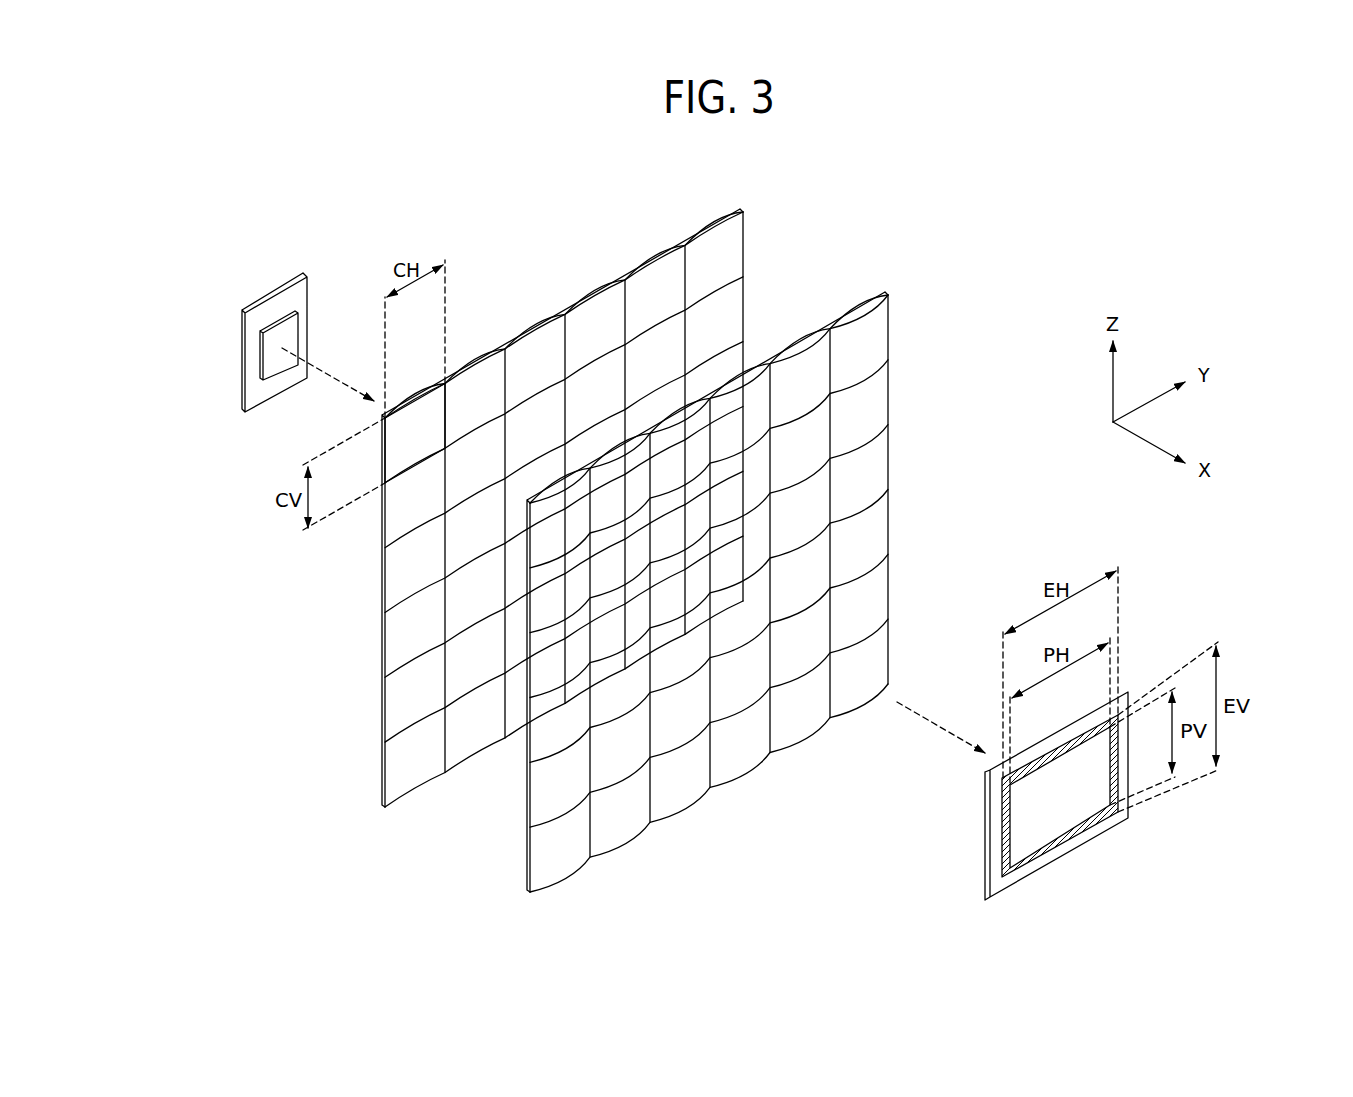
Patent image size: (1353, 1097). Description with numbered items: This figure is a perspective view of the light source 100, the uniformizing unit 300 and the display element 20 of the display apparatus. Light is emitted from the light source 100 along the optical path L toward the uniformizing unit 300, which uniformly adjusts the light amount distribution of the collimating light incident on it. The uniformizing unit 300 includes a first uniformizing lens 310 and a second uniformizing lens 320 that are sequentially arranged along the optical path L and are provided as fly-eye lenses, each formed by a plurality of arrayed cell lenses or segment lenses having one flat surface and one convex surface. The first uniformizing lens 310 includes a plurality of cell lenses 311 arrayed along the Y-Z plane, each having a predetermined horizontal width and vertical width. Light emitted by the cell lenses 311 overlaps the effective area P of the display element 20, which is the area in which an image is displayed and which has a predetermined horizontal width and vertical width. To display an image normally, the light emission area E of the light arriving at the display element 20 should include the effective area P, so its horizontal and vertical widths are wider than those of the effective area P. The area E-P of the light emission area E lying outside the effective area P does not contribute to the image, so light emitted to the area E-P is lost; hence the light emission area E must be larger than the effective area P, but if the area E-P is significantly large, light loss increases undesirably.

The light source 100 is at (267, 357).
The uniformizing unit 300 is at (662, 527).
The first uniformizing lens 310 is at (766, 221).
The cell lens 311 is at (413, 447).
The second uniformizing lens 320 is at (772, 573).
The display element 20 is at (1018, 821).
The light emission area E is at (1010, 878).
The area of the light emission area outside the effective area E-P is at (1050, 848).
The effective area P is at (1100, 813).
The optical path L is at (633, 550).